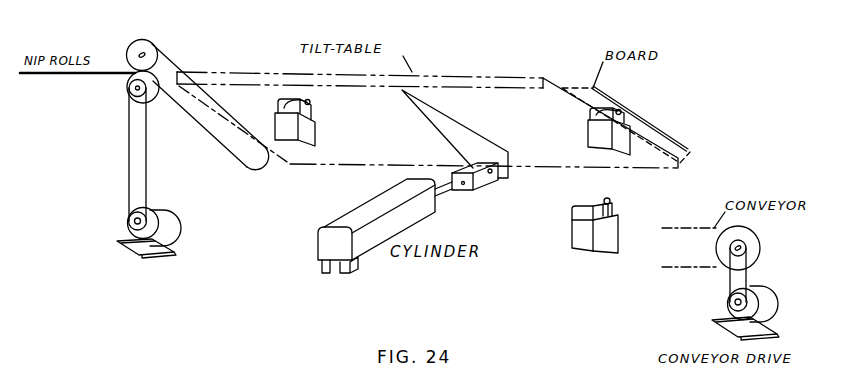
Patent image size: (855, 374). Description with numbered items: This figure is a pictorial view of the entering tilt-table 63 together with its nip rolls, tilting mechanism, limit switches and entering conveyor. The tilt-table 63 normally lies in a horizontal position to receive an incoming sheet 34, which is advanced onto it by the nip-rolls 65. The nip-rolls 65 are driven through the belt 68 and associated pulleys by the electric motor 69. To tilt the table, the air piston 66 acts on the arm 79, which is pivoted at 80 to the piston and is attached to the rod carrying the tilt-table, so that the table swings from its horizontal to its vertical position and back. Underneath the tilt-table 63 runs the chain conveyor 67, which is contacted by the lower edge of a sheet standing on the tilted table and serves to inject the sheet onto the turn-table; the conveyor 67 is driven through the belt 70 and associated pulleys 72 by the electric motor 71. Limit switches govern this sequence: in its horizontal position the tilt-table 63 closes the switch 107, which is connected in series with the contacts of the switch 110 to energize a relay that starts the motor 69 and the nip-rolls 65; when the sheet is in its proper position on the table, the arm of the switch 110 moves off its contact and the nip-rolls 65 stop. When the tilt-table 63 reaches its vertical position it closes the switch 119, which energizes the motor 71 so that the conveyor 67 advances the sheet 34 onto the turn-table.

The sheet 34 is at (85, 75).
The tilt-table 63 is at (222, 71).
The nip-rolls 65 is at (170, 50).
The air piston 66 is at (348, 218).
The chain conveyor 67 is at (685, 266).
The belt 68 is at (128, 141).
The electric motor 69 is at (173, 232).
The belt 70 is at (746, 280).
The electric motor 71 is at (771, 314).
The pulleys 72 is at (752, 250).
The arm 79 is at (510, 177).
The pivot 80 is at (490, 174).
The switch 107 is at (315, 127).
The switch 110 is at (588, 135).
The switch 119 is at (573, 232).